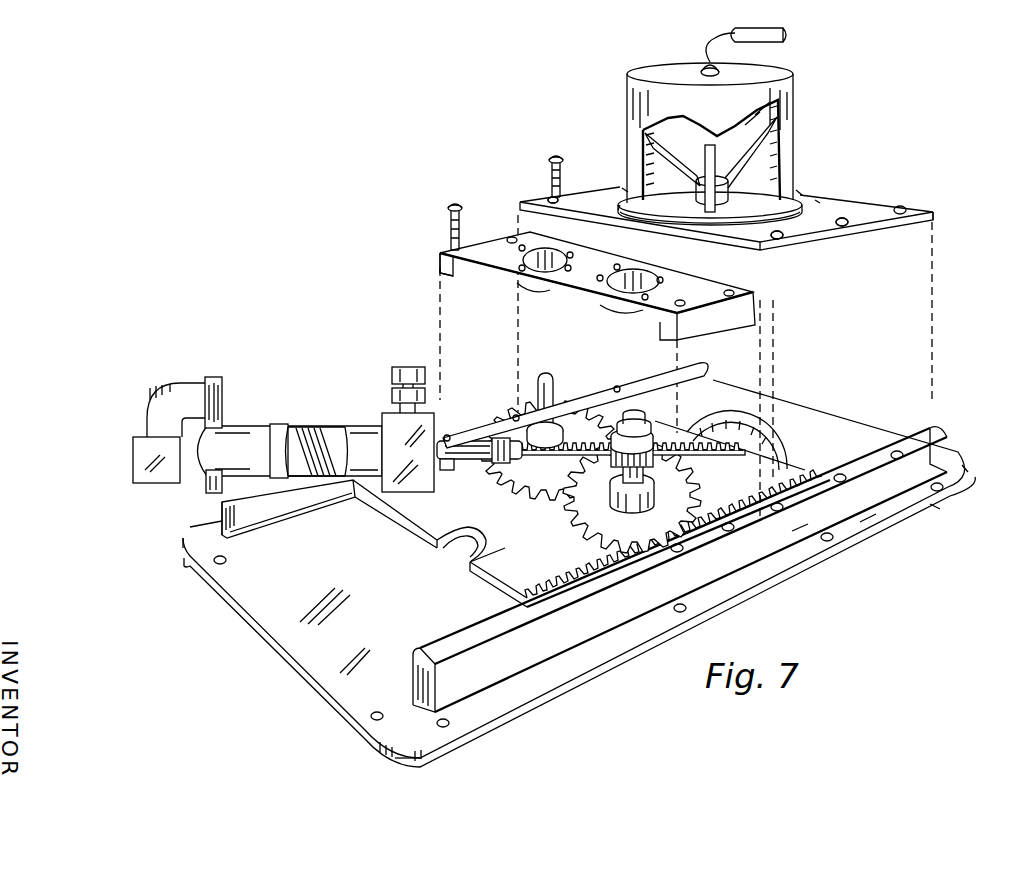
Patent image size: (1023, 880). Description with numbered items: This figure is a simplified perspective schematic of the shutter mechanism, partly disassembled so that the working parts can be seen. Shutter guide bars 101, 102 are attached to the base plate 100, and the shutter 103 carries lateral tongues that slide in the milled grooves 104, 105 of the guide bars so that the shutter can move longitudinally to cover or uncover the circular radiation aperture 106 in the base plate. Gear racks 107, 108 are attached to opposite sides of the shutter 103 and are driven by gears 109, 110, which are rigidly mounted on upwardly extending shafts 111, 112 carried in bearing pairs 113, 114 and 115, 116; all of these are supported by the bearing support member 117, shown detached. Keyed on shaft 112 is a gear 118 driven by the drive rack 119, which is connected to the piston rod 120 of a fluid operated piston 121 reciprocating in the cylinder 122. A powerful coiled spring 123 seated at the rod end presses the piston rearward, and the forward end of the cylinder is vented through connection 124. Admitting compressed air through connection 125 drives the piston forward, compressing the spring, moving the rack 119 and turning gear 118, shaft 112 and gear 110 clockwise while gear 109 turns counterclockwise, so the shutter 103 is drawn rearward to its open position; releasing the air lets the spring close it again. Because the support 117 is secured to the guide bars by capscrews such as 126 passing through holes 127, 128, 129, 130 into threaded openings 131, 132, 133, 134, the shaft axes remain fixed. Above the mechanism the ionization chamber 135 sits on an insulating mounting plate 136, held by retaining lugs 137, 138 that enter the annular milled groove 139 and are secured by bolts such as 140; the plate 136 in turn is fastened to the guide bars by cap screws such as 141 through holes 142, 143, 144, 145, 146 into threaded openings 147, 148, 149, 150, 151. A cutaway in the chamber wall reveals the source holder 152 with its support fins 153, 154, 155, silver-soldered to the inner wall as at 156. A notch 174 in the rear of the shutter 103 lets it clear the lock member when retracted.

The base plate 100 is at (295, 663).
The shutter guide bar 101 is at (224, 512).
The shutter guide bar 102 is at (948, 440).
The shutter 103 is at (400, 524).
The milled groove 104 is at (258, 536).
The milled groove 105 is at (415, 703).
The radiation aperture 106 is at (762, 440).
The gear rack 107 is at (446, 472).
The gear rack 108 is at (528, 594).
The gear 109 is at (532, 494).
The gear 110 is at (592, 530).
The shaft 111 is at (552, 384).
The shaft 112 is at (624, 466).
The bearing 113 is at (558, 418).
The bearing 114 is at (502, 464).
The bearing 115 is at (650, 422).
The bearing 116 is at (656, 500).
The bearing support member 117 is at (757, 310).
The gear 118 is at (656, 458).
The drive rack 119 is at (708, 449).
The piston rod 120 is at (467, 440).
The piston 121 is at (283, 433).
The cylinder 122 is at (255, 427).
The coiled spring 123 is at (322, 435).
The connection 124 is at (408, 370).
The connection 125 is at (223, 400).
The capscrew 126 is at (450, 210).
The hole 127 is at (448, 250).
The hole 128 is at (510, 237).
The hole 129 is at (682, 300).
The hole 130 is at (731, 290).
The threaded opening 131 is at (447, 434).
The threaded opening 132 is at (515, 415).
The threaded opening 133 is at (750, 565).
The threaded opening 134 is at (800, 528).
The ionization chamber 135 is at (632, 104).
The mounting plate 136 is at (920, 205).
The retaining lug 137 is at (662, 222).
The retaining lug 138 is at (817, 200).
The annular milled groove 139 is at (600, 214).
The bolt 140 is at (800, 192).
The cap screw 141 is at (553, 158).
The hole 142 is at (548, 198).
The hole 143 is at (625, 190).
The hole 144 is at (786, 240).
The hole 145 is at (858, 227).
The hole 146 is at (928, 218).
The threaded opening 147 is at (618, 386).
The threaded opening 148 is at (694, 364).
The threaded opening 149 is at (868, 516).
The threaded opening 150 is at (935, 508).
The threaded opening 151 is at (966, 470).
The source holder 152 is at (733, 185).
The support fin 153 is at (650, 160).
The support fin 154 is at (716, 160).
The support fin 155 is at (768, 160).
The soldered joint 156 is at (782, 135).
The notch 174 is at (463, 550).